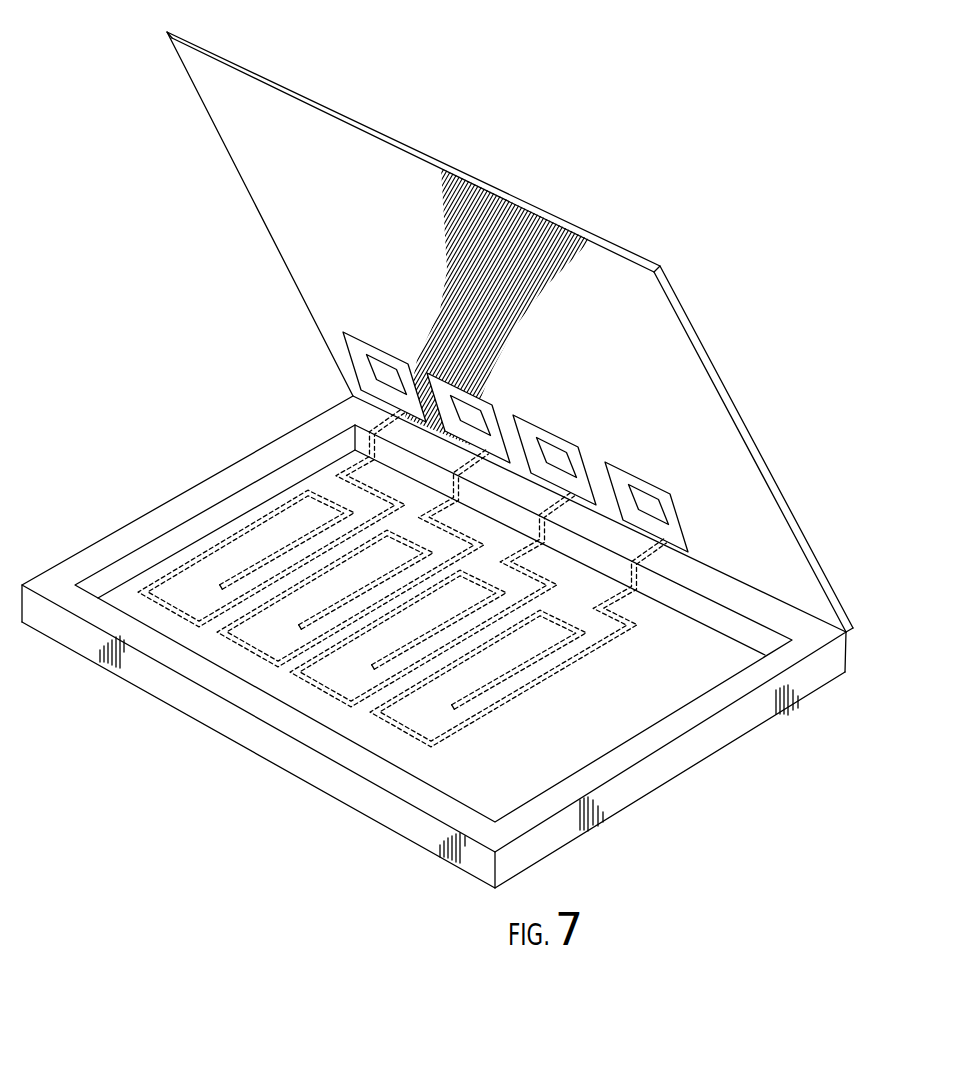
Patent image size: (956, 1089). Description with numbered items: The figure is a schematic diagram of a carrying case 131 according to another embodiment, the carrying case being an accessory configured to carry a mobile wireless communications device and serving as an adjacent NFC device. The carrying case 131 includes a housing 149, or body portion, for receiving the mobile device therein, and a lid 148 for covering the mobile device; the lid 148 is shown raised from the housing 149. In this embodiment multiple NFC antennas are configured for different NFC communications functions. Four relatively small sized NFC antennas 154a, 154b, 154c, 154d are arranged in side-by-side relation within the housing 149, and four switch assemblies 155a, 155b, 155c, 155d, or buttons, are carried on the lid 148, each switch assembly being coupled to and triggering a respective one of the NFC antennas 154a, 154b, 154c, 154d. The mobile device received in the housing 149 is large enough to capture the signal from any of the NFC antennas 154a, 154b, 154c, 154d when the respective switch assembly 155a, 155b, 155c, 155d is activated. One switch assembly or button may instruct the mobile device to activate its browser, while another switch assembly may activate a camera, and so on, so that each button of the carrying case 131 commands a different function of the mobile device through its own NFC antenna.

The carrying case 131 is at (217, 466).
The lid 148 is at (221, 137).
The housing 149 is at (697, 765).
The NFC antenna 154a is at (186, 563).
The NFC antenna 154b is at (227, 643).
The NFC antenna 154c is at (327, 698).
The NFC antenna 154d is at (400, 735).
The switch assembly 155a is at (366, 343).
The switch assembly 155b is at (419, 372).
The switch assembly 155c is at (563, 441).
The switch assembly 155d is at (652, 484).